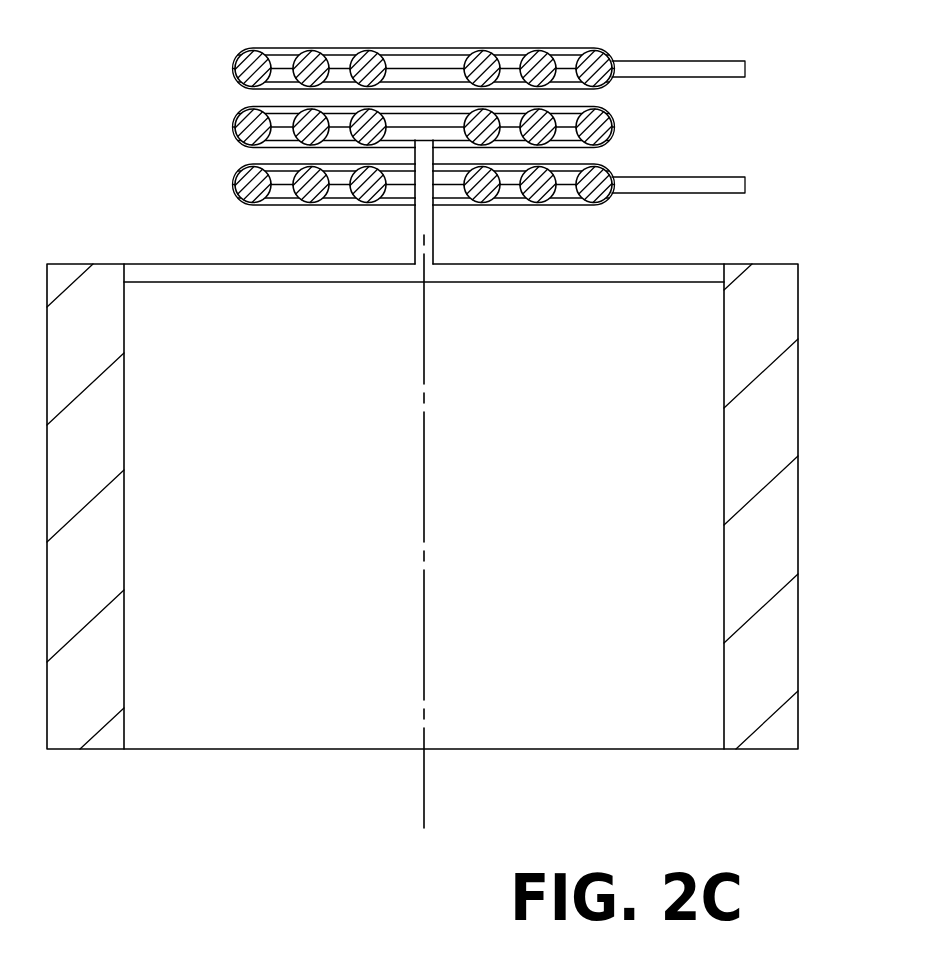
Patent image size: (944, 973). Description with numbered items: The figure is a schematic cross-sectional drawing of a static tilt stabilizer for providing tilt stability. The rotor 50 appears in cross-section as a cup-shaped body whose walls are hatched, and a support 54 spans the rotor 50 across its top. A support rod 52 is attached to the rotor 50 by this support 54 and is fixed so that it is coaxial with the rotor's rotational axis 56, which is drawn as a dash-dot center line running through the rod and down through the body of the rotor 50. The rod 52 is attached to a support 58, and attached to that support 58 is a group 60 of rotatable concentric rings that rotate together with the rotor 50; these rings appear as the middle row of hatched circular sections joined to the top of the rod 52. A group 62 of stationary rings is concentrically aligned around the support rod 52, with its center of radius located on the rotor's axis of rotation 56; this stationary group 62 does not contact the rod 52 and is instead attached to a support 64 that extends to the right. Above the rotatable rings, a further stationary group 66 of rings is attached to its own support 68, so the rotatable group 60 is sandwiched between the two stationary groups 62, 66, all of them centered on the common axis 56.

The rotor 50 is at (124, 433).
The support rod 52 is at (415, 238).
The support 54 is at (622, 265).
The rotational axis 56 is at (416, 776).
The support 58 is at (580, 103).
The group of rotatable concentric rings 60 is at (237, 128).
The group of stationary rings 62 is at (235, 188).
The support 64 is at (727, 173).
The stationary group 66 is at (235, 70).
The support 68 is at (713, 60).